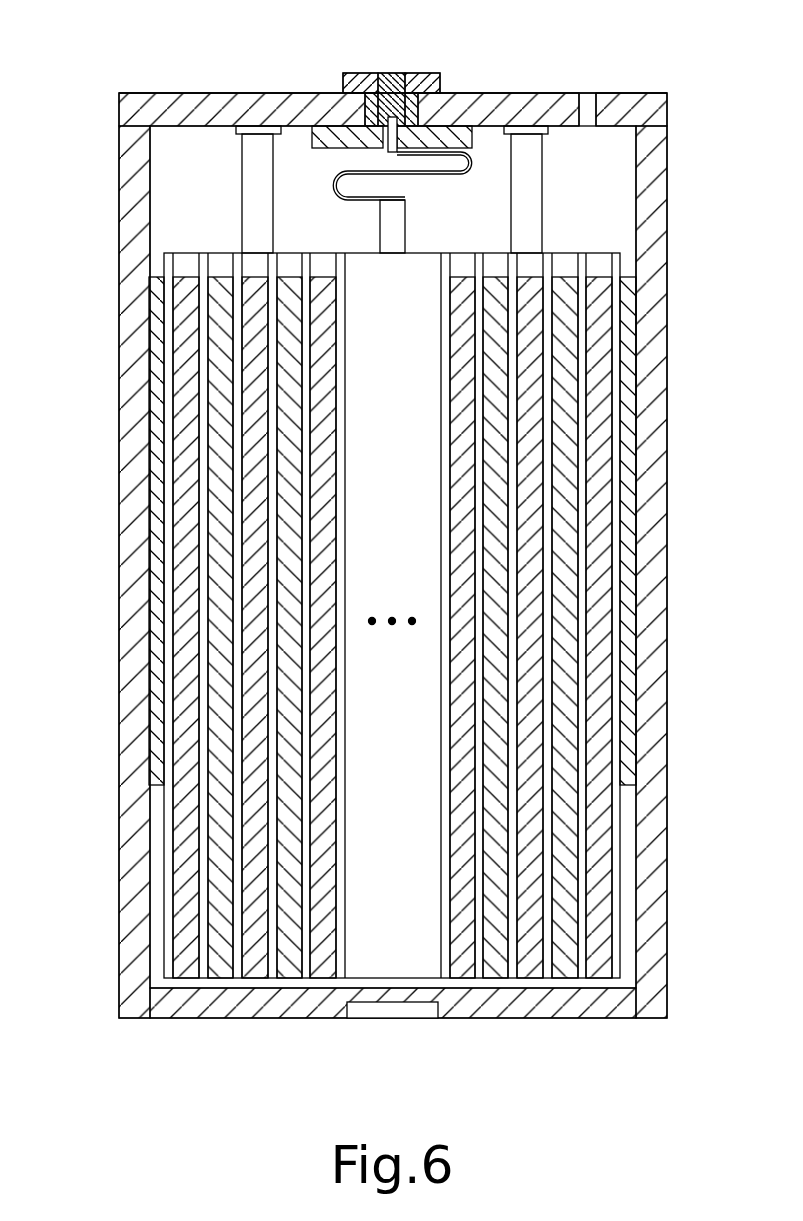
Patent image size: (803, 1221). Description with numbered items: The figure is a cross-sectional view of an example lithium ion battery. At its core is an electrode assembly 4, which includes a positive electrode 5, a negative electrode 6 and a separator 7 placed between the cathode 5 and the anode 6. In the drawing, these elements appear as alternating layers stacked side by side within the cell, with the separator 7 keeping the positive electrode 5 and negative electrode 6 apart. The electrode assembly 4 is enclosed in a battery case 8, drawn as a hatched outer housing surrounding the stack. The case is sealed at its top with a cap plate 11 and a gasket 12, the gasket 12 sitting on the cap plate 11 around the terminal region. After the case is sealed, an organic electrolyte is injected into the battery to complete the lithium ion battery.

The electrode assembly 4 is at (557, 222).
The positive electrode 5 is at (603, 923).
The negative electrode 6 is at (208, 817).
The separator 7 is at (173, 917).
The battery case 8 is at (120, 257).
The cap plate 11 is at (542, 93).
The gasket 12 is at (352, 73).